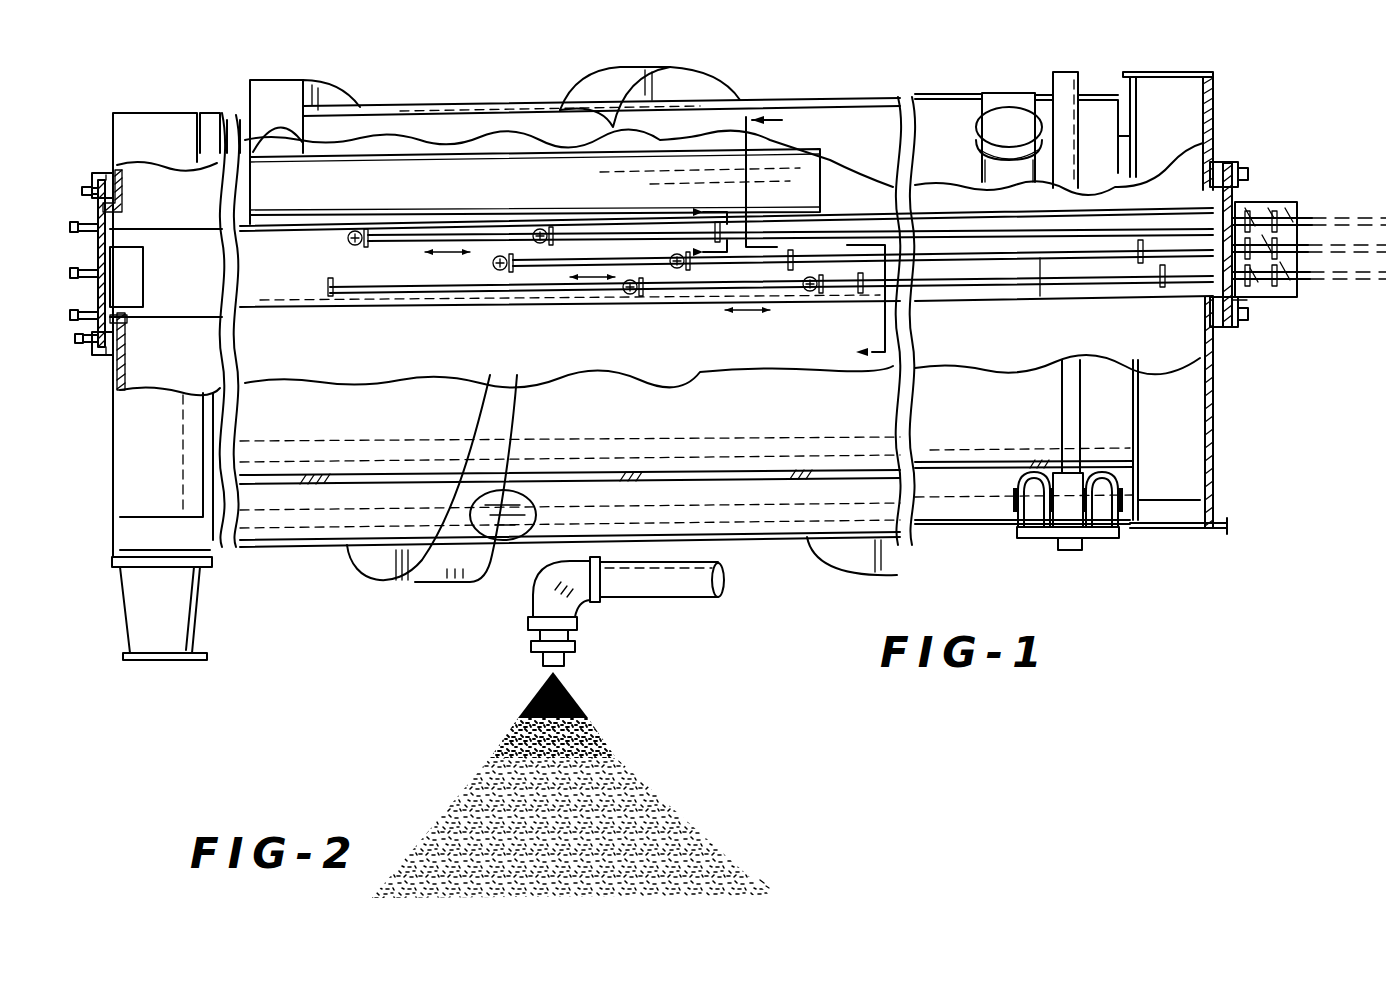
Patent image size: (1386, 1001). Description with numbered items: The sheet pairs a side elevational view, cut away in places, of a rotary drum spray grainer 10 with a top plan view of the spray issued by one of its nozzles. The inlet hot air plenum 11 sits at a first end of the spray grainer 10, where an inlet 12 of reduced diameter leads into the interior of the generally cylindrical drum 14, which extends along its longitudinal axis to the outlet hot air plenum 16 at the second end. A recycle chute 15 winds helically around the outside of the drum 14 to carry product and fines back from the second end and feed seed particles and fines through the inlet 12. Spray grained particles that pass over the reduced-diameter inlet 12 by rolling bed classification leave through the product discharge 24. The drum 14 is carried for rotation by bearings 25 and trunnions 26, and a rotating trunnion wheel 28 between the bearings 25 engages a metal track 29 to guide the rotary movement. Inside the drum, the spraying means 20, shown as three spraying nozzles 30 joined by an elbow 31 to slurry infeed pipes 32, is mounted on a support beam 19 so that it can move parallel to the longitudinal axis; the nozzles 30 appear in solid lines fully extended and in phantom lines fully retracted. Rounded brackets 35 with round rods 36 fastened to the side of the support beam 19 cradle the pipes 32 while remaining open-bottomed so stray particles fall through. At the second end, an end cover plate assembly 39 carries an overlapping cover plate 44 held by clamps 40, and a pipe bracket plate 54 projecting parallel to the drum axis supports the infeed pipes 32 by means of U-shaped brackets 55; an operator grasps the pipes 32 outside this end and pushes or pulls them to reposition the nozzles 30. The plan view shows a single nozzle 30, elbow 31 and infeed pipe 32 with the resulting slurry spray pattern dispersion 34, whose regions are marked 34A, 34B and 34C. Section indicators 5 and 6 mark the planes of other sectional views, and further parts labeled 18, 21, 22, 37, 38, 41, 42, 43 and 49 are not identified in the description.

In FIG. 1, the rotary drum spray grainer 10 is at (810, 68).
In FIG. 1, the inlet hot air plenum 11 is at (153, 112).
In FIG. 1, the inlet 12 is at (205, 113).
In FIG. 1, the drum 14 is at (446, 105).
In FIG. 1, the recycle chute 15 is at (287, 80).
In FIG. 1, the outlet hot air plenum 16 is at (1168, 72).
In FIG. 1, the inner housing 18 is at (535, 182).
In FIG. 1, the support beam 19 is at (661, 330).
In FIG. 1, the spraying means 20 is at (543, 279).
In FIG. 1, the lower shell 21 is at (637, 353).
In FIG. 1, the lower end section 22 is at (970, 348).
In FIG. 1, the product discharge 24 is at (138, 604).
In FIG. 1, the bearings 25 is at (1030, 528).
In FIG. 1, the trunnions 26 is at (1133, 500).
In FIG. 1, the rotating trunnion wheel 28 is at (1068, 522).
In FIG. 1, the metal track 29 is at (1068, 73).
In FIG. 1, the spraying nozzle 30 is at (355, 247).
In FIG. 2, the spraying nozzle 30 is at (540, 665).
In FIG. 1, the elbow 31 is at (530, 582).
In FIG. 1, the slurry infeed pipe 32 is at (1306, 224).
In FIG. 2, the slurry infeed pipe 32 is at (705, 600).
In FIG. 2, the slurry spray pattern dispersion 34 is at (688, 802).
In FIG. 2, the spray core 34A is at (585, 692).
In FIG. 2, the spray intermediate zone 34B is at (478, 772).
In FIG. 2, the spray outer zone 34C is at (770, 882).
In FIG. 1, the bracket 35 is at (855, 290).
In FIG. 1, the round shaped rods 36 is at (1062, 285).
In FIG. 1, the end flange 37 is at (127, 320).
In FIG. 1, the end plate 38 is at (96, 292).
In FIG. 1, the end cover plate assembly 39 is at (1238, 195).
In FIG. 1, the clamps 40 is at (95, 173).
In FIG. 1, the bolt 41 is at (84, 191).
In FIG. 1, the gasket 42 is at (107, 178).
In FIG. 1, the end plate 43 is at (1224, 162).
In FIG. 1, the overlapping cover plate 44 is at (1248, 301).
In FIG. 1, the access door 49 is at (140, 260).
In FIG. 1, the pipe bracket plate 54 is at (1288, 215).
In FIG. 1, the U-shaped brackets 55 is at (1273, 215).
In FIG. 1, the section line 5 is at (815, 241).
In FIG. 1, the section line 6 is at (712, 237).